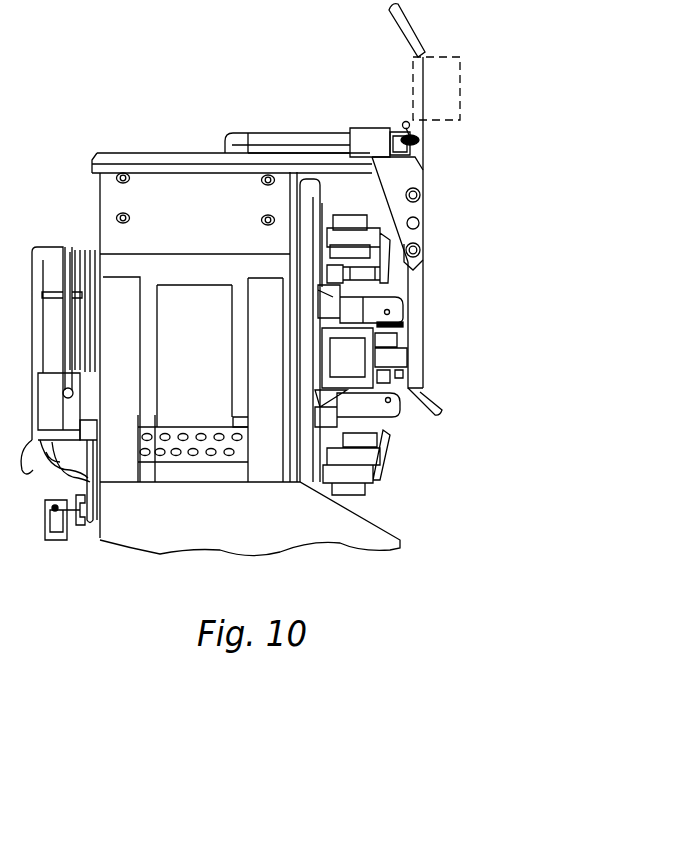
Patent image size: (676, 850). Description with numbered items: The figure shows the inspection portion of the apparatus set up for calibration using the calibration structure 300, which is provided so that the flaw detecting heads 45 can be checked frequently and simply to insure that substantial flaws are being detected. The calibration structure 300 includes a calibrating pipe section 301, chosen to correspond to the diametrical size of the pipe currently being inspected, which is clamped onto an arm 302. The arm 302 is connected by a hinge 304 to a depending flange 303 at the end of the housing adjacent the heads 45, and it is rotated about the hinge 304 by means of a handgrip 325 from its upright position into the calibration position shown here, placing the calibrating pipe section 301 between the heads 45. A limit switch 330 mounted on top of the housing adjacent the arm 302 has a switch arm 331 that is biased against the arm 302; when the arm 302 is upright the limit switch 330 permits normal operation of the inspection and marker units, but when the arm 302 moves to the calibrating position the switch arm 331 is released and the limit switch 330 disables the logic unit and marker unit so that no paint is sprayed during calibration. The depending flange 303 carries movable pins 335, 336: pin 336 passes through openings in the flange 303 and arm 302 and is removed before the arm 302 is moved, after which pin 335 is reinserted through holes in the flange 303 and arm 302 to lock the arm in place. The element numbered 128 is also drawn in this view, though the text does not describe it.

The calibration structure 300 is at (492, 96).
The handgrip 325 is at (403, 28).
The calibrating pipe section 301 is at (445, 62).
The limit switch 330 is at (368, 128).
The switch arm 331 is at (404, 128).
The arm 302 is at (422, 145).
The depending flange 303 is at (417, 172).
The pin 335 is at (421, 195).
The hinge 304 is at (420, 223).
The pin 336 is at (421, 250).
The clamp arm 128 is at (400, 327).
The flaw detecting heads 45 is at (402, 360).